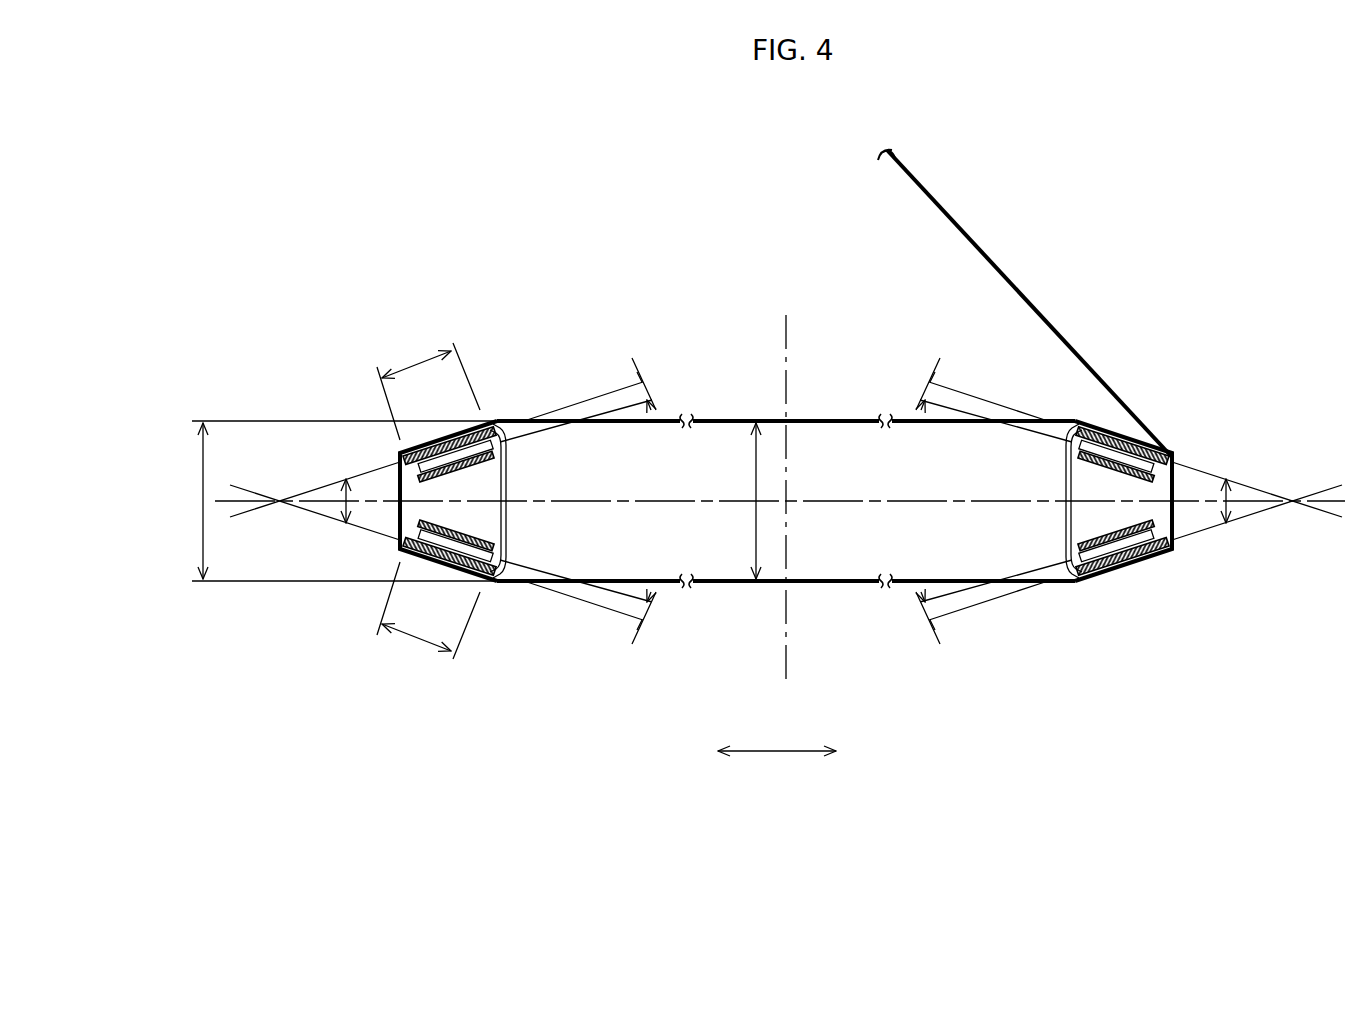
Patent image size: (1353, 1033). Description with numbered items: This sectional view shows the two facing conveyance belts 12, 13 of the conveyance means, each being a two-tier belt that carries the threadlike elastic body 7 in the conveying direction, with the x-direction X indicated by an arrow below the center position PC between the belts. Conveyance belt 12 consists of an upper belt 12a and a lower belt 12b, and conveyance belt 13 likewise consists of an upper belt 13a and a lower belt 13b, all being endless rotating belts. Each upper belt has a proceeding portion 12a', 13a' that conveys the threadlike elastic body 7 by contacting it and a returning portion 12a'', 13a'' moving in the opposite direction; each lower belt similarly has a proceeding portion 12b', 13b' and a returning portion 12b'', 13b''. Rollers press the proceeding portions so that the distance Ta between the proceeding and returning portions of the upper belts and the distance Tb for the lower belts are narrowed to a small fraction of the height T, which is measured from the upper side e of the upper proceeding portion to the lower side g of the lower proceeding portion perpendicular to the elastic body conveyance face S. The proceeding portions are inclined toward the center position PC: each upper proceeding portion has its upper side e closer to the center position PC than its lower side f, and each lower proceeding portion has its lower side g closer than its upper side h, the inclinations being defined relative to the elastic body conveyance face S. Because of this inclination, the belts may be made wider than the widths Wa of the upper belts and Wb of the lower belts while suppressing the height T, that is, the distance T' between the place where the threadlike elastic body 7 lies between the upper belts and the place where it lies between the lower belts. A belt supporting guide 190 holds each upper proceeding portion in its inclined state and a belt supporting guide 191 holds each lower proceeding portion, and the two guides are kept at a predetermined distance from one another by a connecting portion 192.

The threadlike elastic body 7 is at (950, 217).
The conveyance belt 12 is at (448, 501).
The upper belt 12a is at (359, 406).
The lower belt 12b is at (354, 591).
The proceeding portion 12a' is at (485, 389).
The proceeding portion 12b' is at (486, 596).
The returning portion 12a'' is at (516, 474).
The returning portion 12b'' is at (503, 537).
The conveyance belt 13 is at (1123, 501).
The upper belt 13a is at (1210, 410).
The lower belt 13b is at (1213, 591).
The proceeding portion 13a' is at (1129, 406).
The proceeding portion 13b' is at (1133, 590).
The returning portion 13a'' is at (1068, 472).
The returning portion 13b'' is at (1069, 537).
The belt supporting guide 190 is at (505, 448).
The belt supporting guide 191 is at (505, 556).
The connecting portion 192 is at (508, 498).
The upper side e is at (500, 428).
The lower side f is at (393, 462).
The lower side g is at (500, 575).
The upper side h is at (393, 539).
The distance Ta is at (645, 390).
The distance Tb is at (655, 612).
The height T is at (337, 501).
The distance T' is at (741, 501).
The width Wa is at (428, 387).
The width Wb is at (428, 621).
The elastic body conveyance face S is at (806, 501).
The center position PC is at (785, 520).
The x-direction X is at (777, 768).